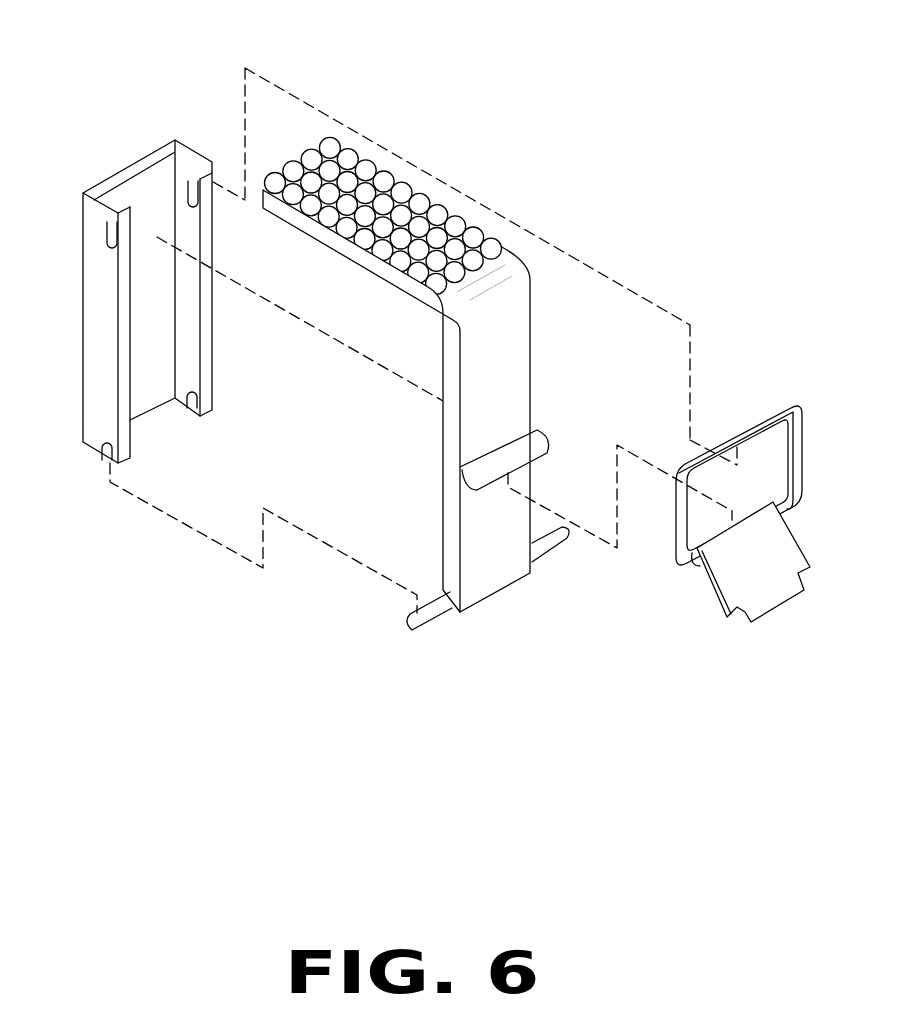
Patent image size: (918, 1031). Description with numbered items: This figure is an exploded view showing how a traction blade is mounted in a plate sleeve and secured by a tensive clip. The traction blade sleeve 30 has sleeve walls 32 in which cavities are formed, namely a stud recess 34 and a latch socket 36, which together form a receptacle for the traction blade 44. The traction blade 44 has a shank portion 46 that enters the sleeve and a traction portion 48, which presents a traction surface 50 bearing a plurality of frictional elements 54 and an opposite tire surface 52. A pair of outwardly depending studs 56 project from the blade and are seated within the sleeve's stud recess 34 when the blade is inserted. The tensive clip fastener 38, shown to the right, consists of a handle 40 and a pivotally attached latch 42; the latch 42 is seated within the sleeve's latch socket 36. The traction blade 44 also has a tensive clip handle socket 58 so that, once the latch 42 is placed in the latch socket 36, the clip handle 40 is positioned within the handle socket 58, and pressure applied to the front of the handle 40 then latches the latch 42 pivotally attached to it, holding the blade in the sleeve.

The traction blade sleeve 30 is at (197, 244).
The traction blade sleeve wall 32 is at (123, 327).
The sleeve stud recess 34 is at (197, 403).
The sleeve latch socket 36 is at (108, 234).
The tensive clip fastener 38 is at (715, 452).
The tensive clip handle 40 is at (770, 592).
The tensive clip latch 42 is at (683, 532).
The traction blade 44 is at (433, 409).
The traction blade shank portion 46 is at (500, 572).
The traction blade traction portion 48 is at (333, 249).
The traction portion traction surface 50 is at (417, 268).
The traction portion tire surface 52 is at (407, 268).
The traction surface frictional element 54 is at (318, 176).
The traction blade stud 56 is at (430, 607).
The traction blade tensive clip handle socket 58 is at (518, 447).